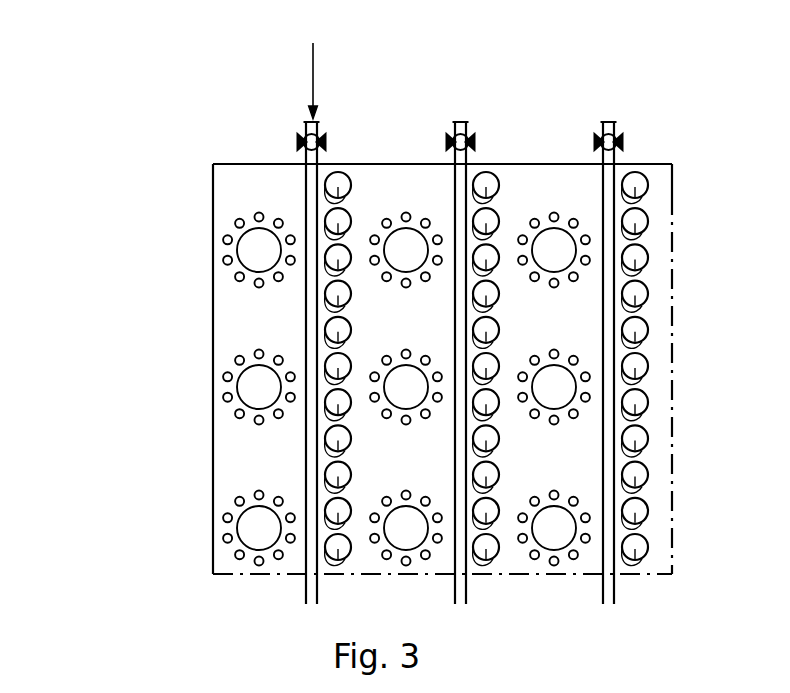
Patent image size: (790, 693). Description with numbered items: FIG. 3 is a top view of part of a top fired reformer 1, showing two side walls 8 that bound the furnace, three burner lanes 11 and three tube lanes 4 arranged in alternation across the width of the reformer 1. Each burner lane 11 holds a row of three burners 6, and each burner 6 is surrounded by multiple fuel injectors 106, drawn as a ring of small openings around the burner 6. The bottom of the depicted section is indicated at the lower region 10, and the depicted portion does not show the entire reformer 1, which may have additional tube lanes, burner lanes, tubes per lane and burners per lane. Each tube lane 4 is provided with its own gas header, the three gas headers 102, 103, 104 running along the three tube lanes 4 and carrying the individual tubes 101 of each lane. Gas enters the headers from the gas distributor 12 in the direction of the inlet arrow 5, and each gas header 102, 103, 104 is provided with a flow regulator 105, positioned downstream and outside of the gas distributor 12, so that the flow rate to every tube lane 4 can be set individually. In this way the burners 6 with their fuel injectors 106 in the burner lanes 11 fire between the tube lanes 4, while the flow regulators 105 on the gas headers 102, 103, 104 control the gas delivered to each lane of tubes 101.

The housing 1 is at (212, 428).
The heat exchanger coil 4 is at (412, 316).
The fluid inlet 5 is at (313, 68).
The burner nozzle 6 is at (186, 183).
The burner plate 8 is at (250, 300).
The lower burner 10 is at (255, 465).
The combustion chamber 11 is at (385, 443).
The gas distributor 12 is at (553, 187).
The first supply pipe 101 is at (323, 166).
The gas header 102 is at (343, 198).
The gas header 103 is at (467, 166).
The gas header 104 is at (618, 164).
The flow regulator 105 is at (325, 140).
The fuel injector 106 is at (198, 150).